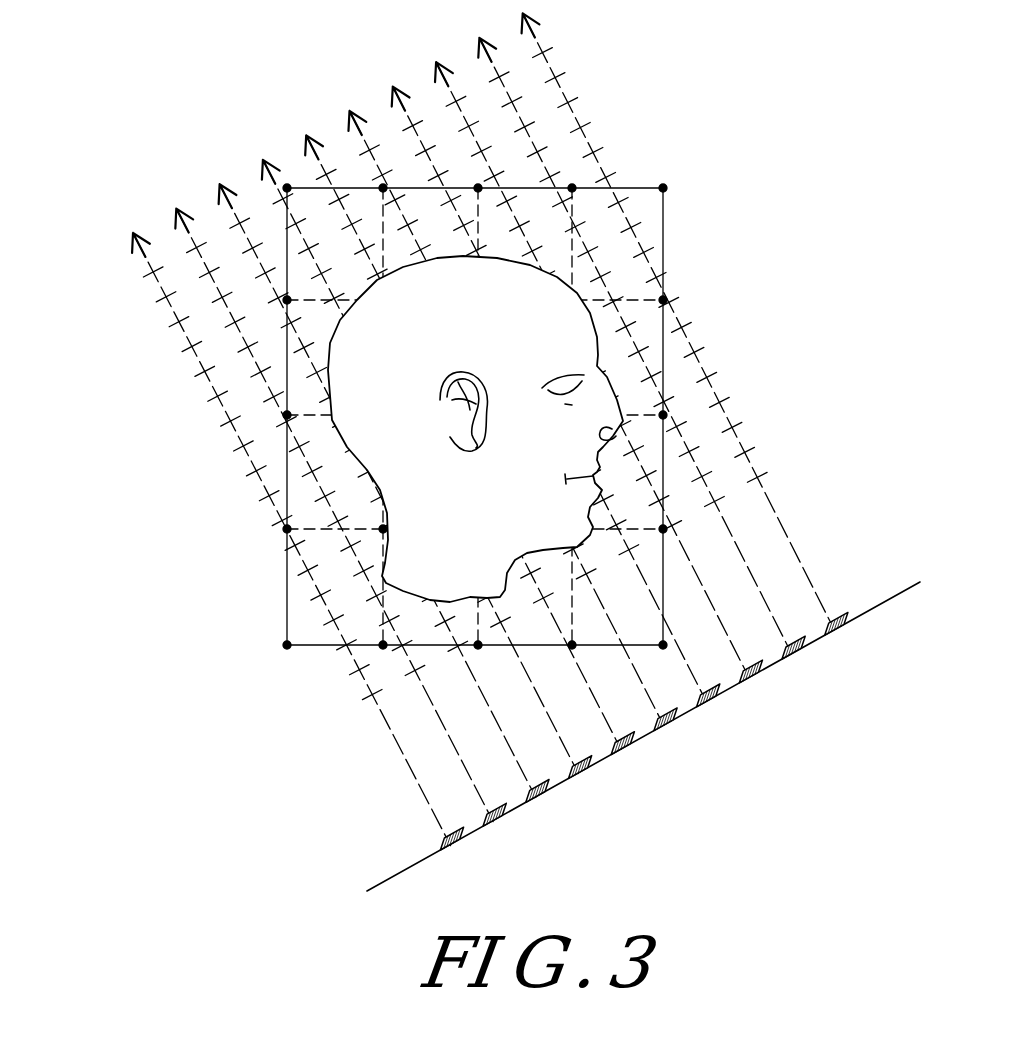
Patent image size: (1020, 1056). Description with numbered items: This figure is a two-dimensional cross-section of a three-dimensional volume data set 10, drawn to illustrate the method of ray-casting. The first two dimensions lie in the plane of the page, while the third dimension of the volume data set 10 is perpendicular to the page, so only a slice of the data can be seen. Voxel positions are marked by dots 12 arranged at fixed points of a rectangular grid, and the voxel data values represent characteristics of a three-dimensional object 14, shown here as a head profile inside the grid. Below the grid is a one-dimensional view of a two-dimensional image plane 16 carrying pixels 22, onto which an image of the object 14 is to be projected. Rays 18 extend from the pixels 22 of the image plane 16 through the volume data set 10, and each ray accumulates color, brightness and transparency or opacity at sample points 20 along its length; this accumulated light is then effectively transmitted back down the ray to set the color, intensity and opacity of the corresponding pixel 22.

The volume data set 10 is at (652, 187).
The dots 12 is at (278, 534).
The three-dimensional object 14 is at (470, 320).
The image plane 16 is at (903, 590).
The rays 18 is at (787, 533).
The sample points 20 is at (595, 120).
The pixels 22 is at (458, 850).